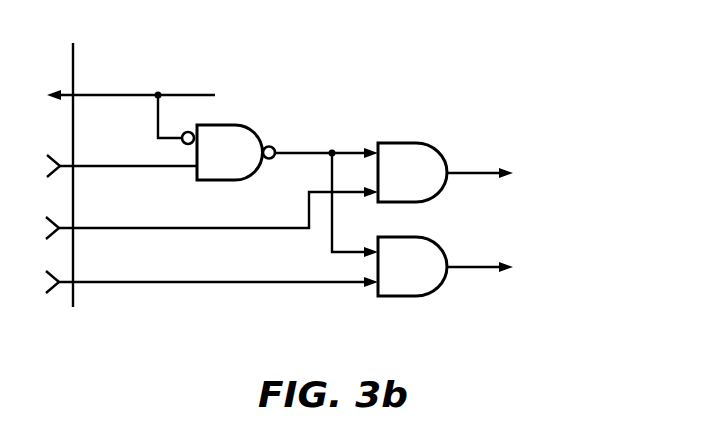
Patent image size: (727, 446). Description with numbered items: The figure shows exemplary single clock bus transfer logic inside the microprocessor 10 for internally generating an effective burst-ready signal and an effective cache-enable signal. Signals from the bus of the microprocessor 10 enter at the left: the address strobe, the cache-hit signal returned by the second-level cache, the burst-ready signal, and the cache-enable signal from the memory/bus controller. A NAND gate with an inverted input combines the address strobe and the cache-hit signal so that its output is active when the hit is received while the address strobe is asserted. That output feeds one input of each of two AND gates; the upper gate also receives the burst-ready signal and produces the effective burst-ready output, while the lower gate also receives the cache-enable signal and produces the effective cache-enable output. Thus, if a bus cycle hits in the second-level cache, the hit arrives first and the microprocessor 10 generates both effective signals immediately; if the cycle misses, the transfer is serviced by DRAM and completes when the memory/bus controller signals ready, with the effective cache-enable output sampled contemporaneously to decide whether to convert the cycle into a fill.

The microprocessor 10 is at (73, 60).